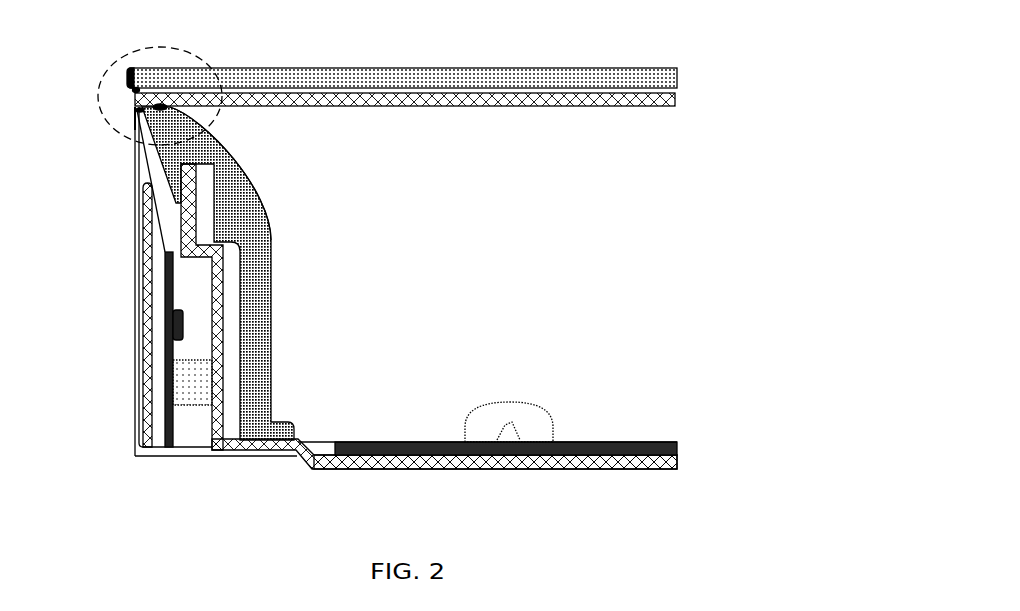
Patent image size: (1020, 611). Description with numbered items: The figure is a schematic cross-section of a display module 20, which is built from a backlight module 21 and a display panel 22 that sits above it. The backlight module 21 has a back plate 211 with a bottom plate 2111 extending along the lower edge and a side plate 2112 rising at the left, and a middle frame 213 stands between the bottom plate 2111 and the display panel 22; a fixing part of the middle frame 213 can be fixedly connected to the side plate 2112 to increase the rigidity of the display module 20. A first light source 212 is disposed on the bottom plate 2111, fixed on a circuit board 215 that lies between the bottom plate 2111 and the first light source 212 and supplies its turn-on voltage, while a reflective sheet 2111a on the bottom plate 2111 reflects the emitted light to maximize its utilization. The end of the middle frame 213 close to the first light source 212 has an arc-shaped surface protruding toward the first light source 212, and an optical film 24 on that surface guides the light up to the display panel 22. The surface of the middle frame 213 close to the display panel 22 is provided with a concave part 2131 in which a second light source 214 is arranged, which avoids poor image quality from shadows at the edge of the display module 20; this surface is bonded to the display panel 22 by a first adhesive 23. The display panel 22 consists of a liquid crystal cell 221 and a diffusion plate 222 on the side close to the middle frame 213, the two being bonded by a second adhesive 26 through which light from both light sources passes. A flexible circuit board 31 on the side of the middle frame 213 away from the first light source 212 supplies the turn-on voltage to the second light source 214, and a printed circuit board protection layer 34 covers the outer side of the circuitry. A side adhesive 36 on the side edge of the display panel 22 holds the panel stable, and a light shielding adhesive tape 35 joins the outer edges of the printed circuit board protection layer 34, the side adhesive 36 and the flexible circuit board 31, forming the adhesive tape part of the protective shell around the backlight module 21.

The display module 20 is at (411, 264).
The backlight module 21 is at (259, 455).
The back plate 211 is at (226, 455).
The bottom plate 2111 is at (628, 463).
The reflective sheet 2111a is at (408, 442).
The side plate 2112 is at (212, 295).
The first light source 212 is at (513, 432).
The middle frame 213 is at (270, 282).
The concave part 2131 is at (134, 118).
The second light source 214 is at (138, 110).
The circuit board 215 is at (580, 449).
The display panel 22 is at (461, 79).
The liquid crystal cell 221 is at (677, 73).
The diffusion plate 222 is at (675, 100).
The first adhesive 23 is at (166, 110).
The optical film 24 is at (261, 198).
The second adhesive 26 is at (134, 88).
The flexible circuit board 31 is at (157, 152).
The printed circuit board protection layer 34 is at (147, 395).
The light shielding adhesive tape 35 is at (134, 333).
The side adhesive 36 is at (128, 73).